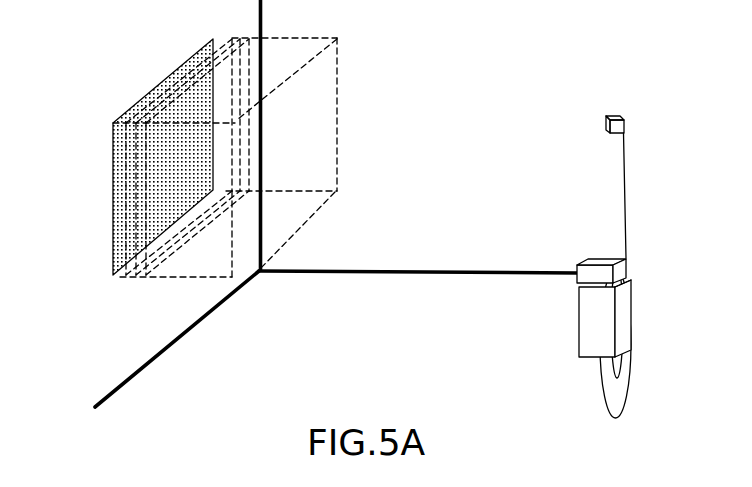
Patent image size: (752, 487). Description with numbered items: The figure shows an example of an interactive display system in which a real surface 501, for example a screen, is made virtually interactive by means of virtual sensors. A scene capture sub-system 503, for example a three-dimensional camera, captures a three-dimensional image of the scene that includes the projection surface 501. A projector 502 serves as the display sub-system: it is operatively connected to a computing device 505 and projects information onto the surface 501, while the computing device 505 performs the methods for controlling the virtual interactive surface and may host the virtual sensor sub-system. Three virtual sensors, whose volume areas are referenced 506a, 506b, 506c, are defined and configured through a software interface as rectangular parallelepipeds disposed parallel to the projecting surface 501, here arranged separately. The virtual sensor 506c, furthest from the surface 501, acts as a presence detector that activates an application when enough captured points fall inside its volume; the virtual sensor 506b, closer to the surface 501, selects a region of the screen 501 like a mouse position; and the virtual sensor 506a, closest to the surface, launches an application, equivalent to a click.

The surface 501 is at (117, 202).
The projector 502 is at (588, 269).
The scene capture sub-system 503 is at (612, 117).
The computing device 505 is at (593, 312).
The virtual sensor 506a is at (128, 270).
The virtual sensor 506b is at (147, 270).
The virtual sensor 506c is at (175, 268).